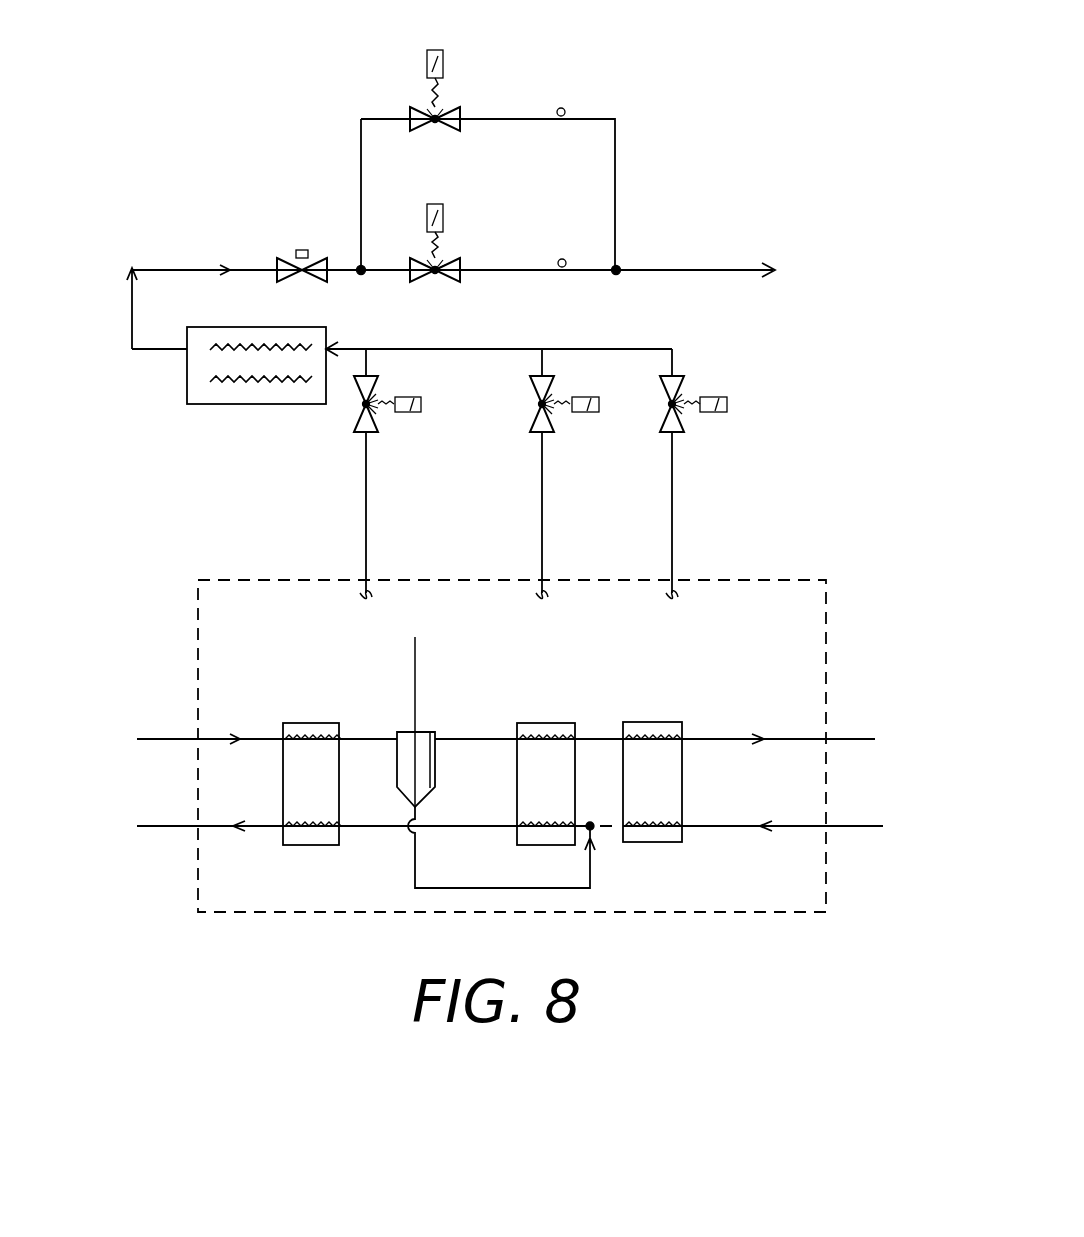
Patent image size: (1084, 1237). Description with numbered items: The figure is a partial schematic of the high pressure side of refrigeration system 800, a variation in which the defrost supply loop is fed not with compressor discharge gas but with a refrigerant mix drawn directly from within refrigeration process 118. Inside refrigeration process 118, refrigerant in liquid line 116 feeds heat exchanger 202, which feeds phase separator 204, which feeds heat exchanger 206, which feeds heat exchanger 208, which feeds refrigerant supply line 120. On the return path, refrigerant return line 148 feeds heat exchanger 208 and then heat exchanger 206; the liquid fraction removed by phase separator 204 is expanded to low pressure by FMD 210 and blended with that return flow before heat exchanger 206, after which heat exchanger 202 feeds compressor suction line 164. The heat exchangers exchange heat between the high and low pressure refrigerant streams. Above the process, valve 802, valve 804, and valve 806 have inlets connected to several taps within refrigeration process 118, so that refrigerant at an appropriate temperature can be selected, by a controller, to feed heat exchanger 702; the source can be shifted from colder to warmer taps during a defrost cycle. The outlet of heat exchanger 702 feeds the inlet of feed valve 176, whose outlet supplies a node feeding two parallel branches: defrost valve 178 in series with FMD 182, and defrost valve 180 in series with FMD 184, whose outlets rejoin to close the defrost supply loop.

The refrigeration system 800 is at (840, 158).
The feed valve 176 is at (282, 262).
The defrost valve 178 is at (420, 278).
The defrost valve 180 is at (420, 125).
The FMD 182 is at (558, 260).
The FMD 184 is at (565, 108).
The heat exchanger 702 is at (230, 405).
The valve 802 is at (352, 428).
The valve 804 is at (552, 430).
The valve 806 is at (680, 380).
The refrigeration process 118 is at (790, 552).
The liquid line 116 is at (175, 739).
The refrigerant supply line 120 is at (842, 739).
The compressor suction line 164 is at (175, 826).
The refrigerant return line 148 is at (842, 826).
The heat exchanger 202 is at (305, 724).
The phase separator 204 is at (432, 736).
The heat exchanger 206 is at (545, 724).
The heat exchanger 208 is at (662, 725).
The FMD 210 is at (508, 882).